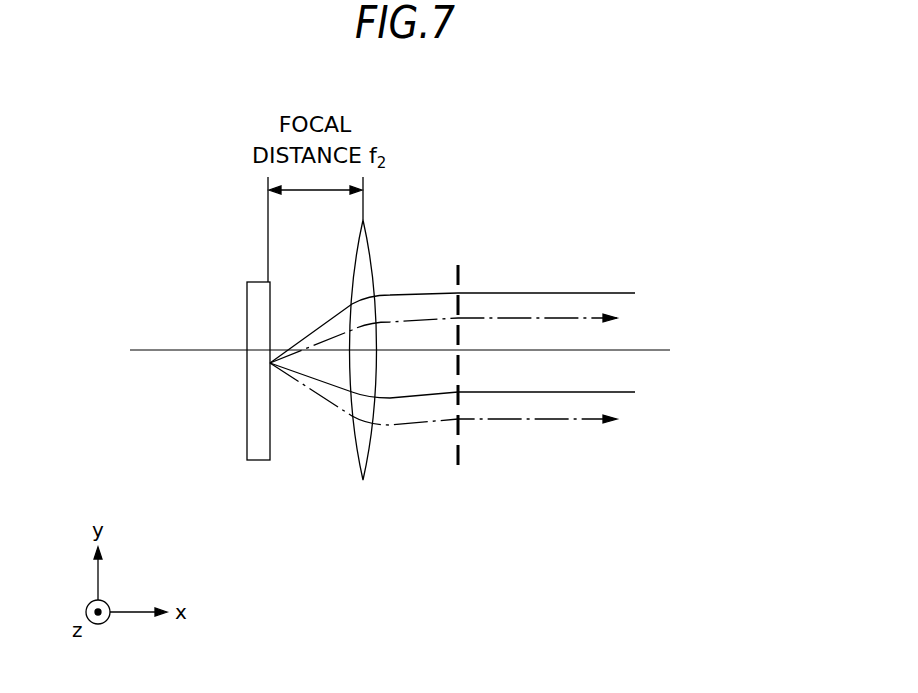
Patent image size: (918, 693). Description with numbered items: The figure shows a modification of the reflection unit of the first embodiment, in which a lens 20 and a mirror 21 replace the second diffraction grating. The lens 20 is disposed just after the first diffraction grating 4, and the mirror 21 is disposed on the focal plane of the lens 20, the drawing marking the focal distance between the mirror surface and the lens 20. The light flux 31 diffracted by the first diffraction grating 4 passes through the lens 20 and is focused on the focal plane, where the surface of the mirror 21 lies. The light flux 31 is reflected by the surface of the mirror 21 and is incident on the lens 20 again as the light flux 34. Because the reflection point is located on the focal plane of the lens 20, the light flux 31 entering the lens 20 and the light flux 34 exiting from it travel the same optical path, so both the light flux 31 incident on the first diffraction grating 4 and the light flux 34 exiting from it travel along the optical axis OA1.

The mirror 21 is at (247, 430).
The lens 20 is at (363, 481).
The first diffraction grating 4 is at (458, 465).
The light flux 31 is at (570, 293).
The light flux 34 is at (562, 420).
The optical axis OA1 is at (645, 349).